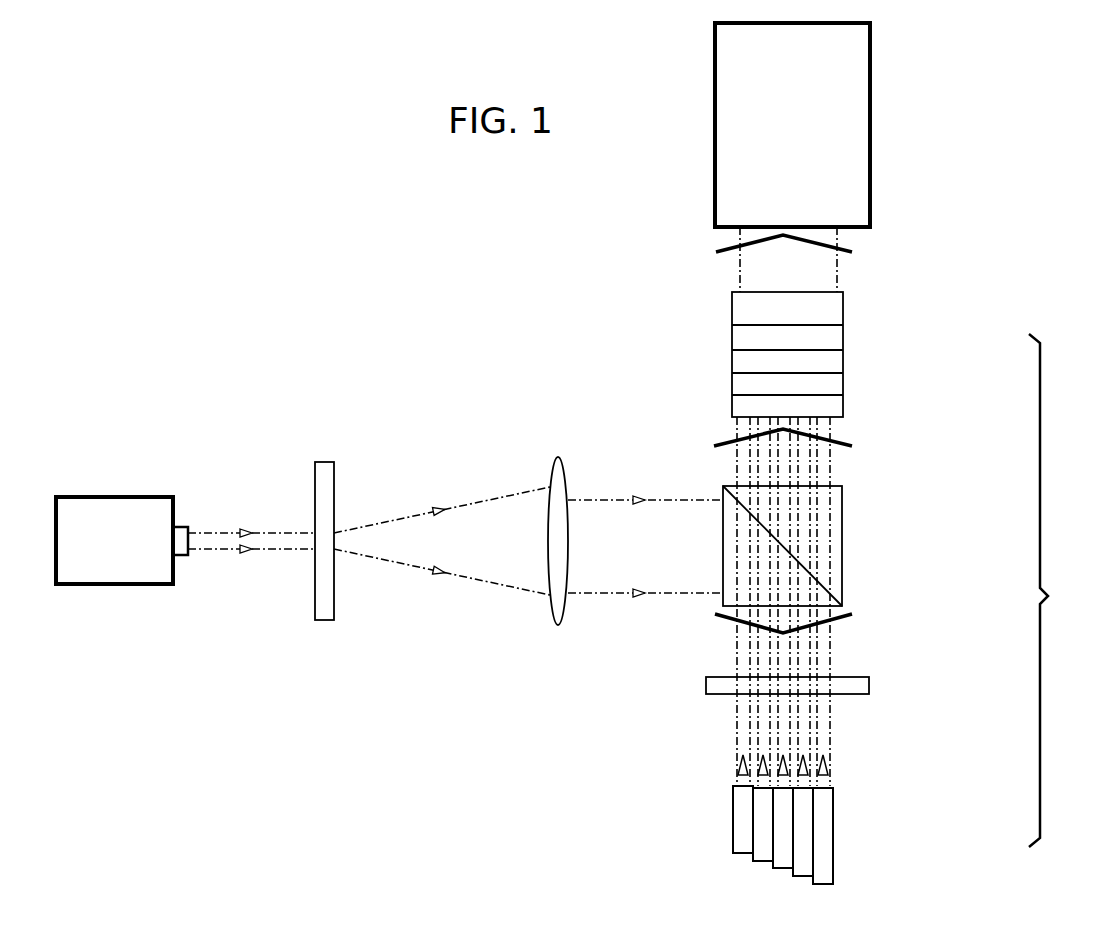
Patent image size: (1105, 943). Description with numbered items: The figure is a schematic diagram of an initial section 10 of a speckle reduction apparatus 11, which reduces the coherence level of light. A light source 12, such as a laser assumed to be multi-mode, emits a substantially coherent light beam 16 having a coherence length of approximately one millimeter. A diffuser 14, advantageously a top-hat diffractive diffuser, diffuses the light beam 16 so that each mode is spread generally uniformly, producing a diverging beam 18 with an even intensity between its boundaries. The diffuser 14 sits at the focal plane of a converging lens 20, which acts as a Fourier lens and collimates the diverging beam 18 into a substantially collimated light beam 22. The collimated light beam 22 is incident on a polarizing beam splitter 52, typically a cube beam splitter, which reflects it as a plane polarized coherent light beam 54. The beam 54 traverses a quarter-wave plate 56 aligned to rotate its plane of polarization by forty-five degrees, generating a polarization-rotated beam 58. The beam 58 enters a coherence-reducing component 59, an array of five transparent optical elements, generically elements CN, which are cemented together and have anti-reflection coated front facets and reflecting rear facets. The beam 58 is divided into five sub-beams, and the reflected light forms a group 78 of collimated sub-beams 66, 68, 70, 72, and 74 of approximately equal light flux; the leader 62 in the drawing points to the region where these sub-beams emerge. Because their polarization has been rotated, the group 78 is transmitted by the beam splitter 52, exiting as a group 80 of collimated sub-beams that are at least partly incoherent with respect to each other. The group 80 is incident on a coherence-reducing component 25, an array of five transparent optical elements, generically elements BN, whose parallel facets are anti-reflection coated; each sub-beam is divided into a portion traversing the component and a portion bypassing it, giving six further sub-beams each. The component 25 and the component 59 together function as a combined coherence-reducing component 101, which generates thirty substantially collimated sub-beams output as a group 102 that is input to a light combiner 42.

The initial section 10 is at (312, 391).
The speckle reduction apparatus 11 is at (422, 303).
The light source 12 is at (116, 497).
The diffuser 14 is at (320, 462).
The light beam 16 is at (212, 530).
The diverging beam 18 is at (410, 528).
The converging lens 20 is at (565, 462).
The collimated light beam 22 is at (646, 486).
The coherence-reducing component 25 is at (865, 351).
The transparent optical elements BN is at (870, 310).
The light combiner 42 is at (871, 100).
The polarizing beam splitter 52 is at (842, 560).
The plane polarized coherent light beam 54 is at (866, 623).
The quarter-wave plate 56 is at (869, 686).
The polarization-rotated beam 58 is at (860, 772).
The coherence-reducing component 59 is at (854, 839).
The transparent optical elements CN is at (856, 861).
The first ray 62 is at (729, 770).
The sub-beam 66 is at (746, 749).
The sub-beam 68 is at (764, 745).
The sub-beam 70 is at (784, 751).
The sub-beam 72 is at (806, 727).
The sub-beam 74 is at (820, 701).
The group of sub-beams 78 is at (703, 787).
The group of exiting collimated sub-beams 80 is at (876, 433).
The combined coherence-reducing component 101 is at (1064, 590).
The group of collimated sub-beams 102 is at (866, 263).